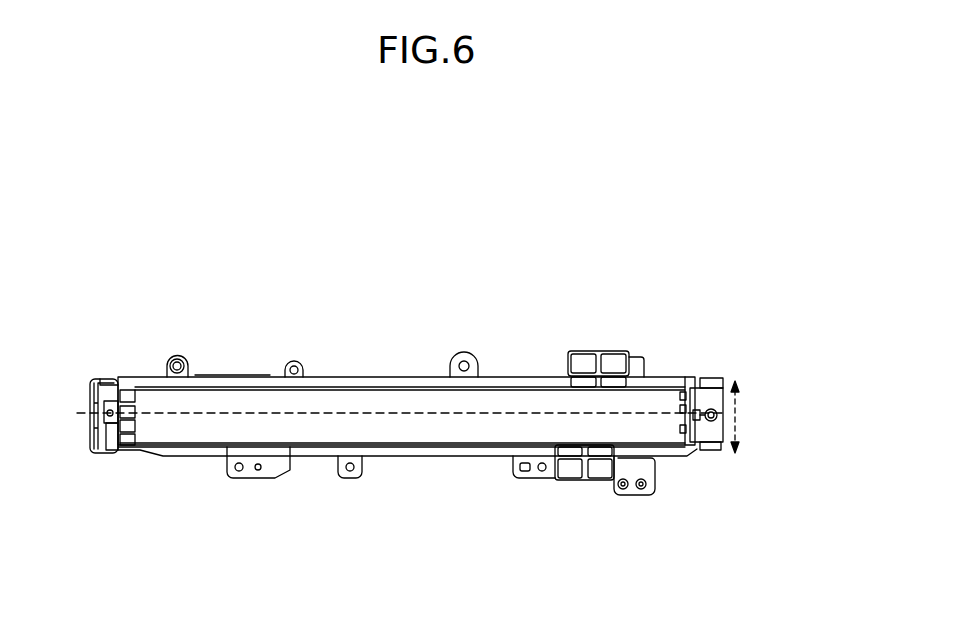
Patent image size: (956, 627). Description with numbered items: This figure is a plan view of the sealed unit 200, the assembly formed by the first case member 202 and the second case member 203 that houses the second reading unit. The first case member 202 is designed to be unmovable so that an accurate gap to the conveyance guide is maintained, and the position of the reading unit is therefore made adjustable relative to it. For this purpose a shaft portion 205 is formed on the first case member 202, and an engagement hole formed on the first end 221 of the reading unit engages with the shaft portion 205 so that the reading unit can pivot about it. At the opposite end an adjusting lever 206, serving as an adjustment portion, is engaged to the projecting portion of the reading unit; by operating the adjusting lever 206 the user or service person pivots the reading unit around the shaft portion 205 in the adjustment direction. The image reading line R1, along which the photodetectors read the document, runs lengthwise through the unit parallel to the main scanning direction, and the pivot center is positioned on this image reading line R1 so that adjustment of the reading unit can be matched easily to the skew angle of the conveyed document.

The sealed unit 200 is at (448, 443).
The first case member 202 is at (93, 437).
The second case member 203 is at (360, 388).
The shaft portion 205 is at (95, 408).
The adjusting lever 206 is at (707, 380).
The first end 221 is at (112, 403).
The image reading line R1 is at (467, 413).